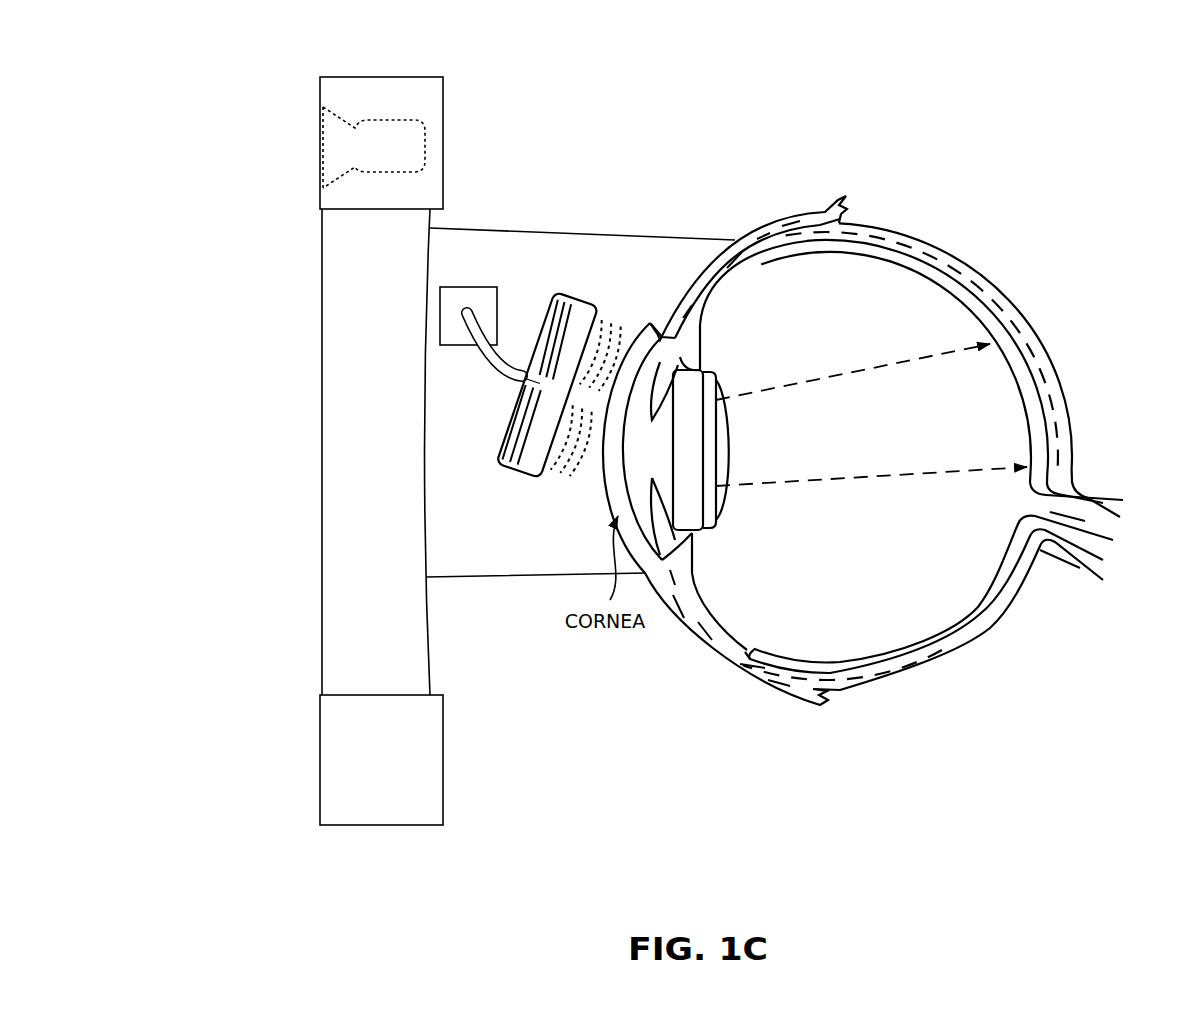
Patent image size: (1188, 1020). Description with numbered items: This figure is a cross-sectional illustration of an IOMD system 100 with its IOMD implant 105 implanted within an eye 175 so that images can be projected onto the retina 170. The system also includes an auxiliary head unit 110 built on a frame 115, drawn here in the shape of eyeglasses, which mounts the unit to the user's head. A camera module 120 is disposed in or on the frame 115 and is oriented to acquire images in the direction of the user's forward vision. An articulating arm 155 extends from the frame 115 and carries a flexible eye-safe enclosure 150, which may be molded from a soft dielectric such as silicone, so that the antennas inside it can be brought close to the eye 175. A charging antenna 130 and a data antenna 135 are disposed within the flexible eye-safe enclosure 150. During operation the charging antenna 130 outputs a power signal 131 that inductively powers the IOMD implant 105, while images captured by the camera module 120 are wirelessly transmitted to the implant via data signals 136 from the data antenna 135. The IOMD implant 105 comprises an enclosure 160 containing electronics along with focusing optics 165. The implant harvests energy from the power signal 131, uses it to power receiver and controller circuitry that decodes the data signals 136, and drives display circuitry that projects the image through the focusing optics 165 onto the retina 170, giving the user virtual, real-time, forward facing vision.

The IOMD system 100 is at (1069, 132).
The IOMD implant 105 is at (734, 511).
The auxiliary head unit 110 is at (270, 378).
The frame 115 is at (467, 594).
The camera module 120 is at (370, 157).
The charging antenna 130 is at (513, 473).
The power signal 131 is at (573, 478).
The data antenna 135 is at (577, 297).
The data signals 136 is at (616, 327).
The flexible eye-safe enclosure 150 is at (592, 308).
The articulating arm 155 is at (478, 323).
The enclosure 160 is at (697, 380).
The focusing optics 165 is at (730, 455).
The retina 170 is at (1028, 390).
The eye 175 is at (827, 312).